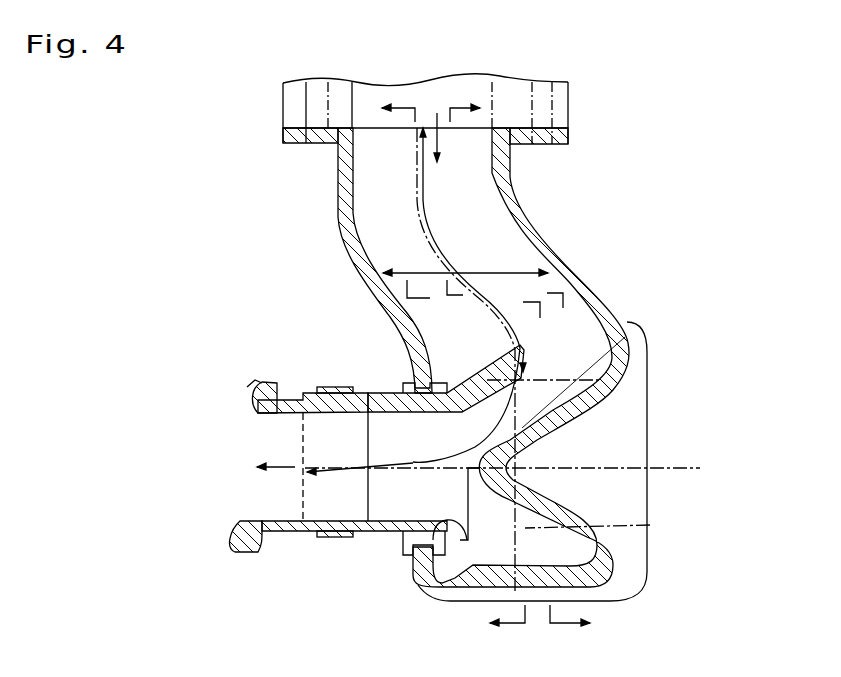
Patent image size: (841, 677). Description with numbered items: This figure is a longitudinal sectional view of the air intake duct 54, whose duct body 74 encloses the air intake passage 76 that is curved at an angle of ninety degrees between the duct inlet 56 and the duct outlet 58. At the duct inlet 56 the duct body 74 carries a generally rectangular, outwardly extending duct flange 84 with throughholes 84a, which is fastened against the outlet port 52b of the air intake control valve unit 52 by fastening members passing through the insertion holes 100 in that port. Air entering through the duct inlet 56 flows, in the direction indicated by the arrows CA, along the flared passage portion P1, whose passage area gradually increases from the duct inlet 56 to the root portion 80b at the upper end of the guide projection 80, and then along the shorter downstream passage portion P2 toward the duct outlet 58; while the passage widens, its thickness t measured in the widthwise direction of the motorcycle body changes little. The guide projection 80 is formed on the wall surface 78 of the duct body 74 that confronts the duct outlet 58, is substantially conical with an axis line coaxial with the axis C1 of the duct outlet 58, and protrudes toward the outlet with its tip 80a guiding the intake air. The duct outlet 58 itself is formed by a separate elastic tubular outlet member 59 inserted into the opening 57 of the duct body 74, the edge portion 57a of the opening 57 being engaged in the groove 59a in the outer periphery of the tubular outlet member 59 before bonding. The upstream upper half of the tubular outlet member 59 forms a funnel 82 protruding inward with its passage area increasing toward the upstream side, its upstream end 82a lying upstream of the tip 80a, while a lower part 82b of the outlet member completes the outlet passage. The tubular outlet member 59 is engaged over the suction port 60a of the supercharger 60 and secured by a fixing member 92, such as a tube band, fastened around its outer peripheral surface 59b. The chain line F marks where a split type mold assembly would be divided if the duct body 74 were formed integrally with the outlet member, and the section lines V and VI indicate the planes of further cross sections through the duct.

The air intake control valve unit 52 is at (283, 103).
The outlet port 52b is at (345, 192).
The air intake duct 54 is at (340, 266).
The duct inlet 56 is at (513, 158).
The opening 57 is at (467, 535).
The edge portion 57a is at (413, 573).
The duct outlet 58 is at (305, 491).
The tubular outlet member 59 is at (383, 393).
The groove 59a is at (413, 553).
The outer peripheral surface 59b is at (353, 548).
The supercharger 60 is at (252, 386).
The suction port 60a is at (330, 415).
The duct body 74 is at (366, 278).
The air intake passage 76 is at (480, 210).
The wall surface 78 is at (640, 331).
The guide projection 80 is at (570, 430).
The tip 80a is at (468, 480).
The root portion 80b is at (597, 372).
The funnel 82 is at (493, 372).
The upstream end 82a is at (523, 348).
The partition wall lower portion 82b is at (560, 490).
The duct flange 84 is at (290, 133).
The throughholes 84a is at (313, 143).
The fixing member 92 is at (330, 387).
The insertion holes 100 is at (303, 113).
The axis C1 is at (620, 468).
The chain line F is at (650, 525).
The flared passage portion P1 is at (442, 240).
The downstream passage portion P2 is at (417, 462).
The combustion air flow CA is at (255, 452).
The thickness t is at (540, 252).
The section line V is at (453, 357).
The section line VI is at (533, 357).